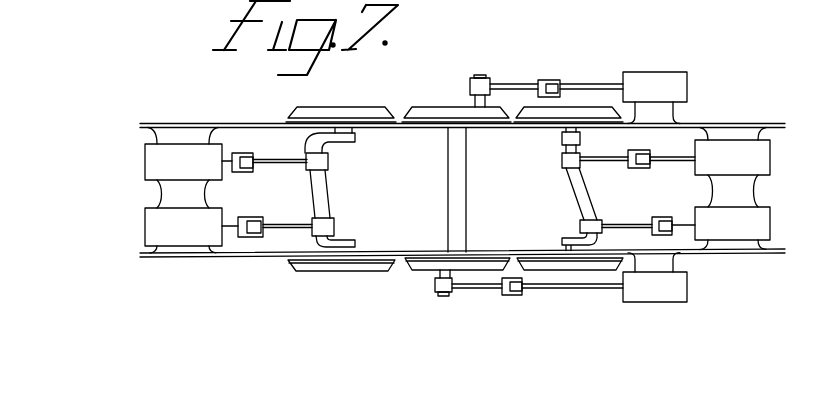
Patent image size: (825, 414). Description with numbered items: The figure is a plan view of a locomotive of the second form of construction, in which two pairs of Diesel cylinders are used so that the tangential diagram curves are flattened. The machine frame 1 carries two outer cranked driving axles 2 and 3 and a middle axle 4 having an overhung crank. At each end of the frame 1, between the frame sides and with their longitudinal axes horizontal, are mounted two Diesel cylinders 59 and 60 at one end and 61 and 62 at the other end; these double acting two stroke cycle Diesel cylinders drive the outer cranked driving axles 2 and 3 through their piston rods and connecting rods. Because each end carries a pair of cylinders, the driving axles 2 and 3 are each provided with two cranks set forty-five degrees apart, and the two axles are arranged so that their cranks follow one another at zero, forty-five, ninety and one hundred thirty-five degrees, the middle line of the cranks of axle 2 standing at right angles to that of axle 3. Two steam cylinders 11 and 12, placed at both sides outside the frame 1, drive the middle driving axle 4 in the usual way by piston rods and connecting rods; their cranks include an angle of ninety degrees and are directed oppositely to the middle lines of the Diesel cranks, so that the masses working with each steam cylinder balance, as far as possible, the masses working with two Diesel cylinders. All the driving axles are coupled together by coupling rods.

The frame 1 is at (256, 128).
The outer cranked driving axle 2 is at (326, 208).
The outer cranked driving axle 3 is at (580, 194).
The middle axle 4 is at (462, 208).
The steam cylinder 11 is at (656, 296).
The steam cylinder 12 is at (660, 73).
The Diesel cylinder 59 is at (152, 227).
The Diesel cylinder 60 is at (148, 167).
The Diesel cylinder 61 is at (766, 224).
The Diesel cylinder 62 is at (766, 158).